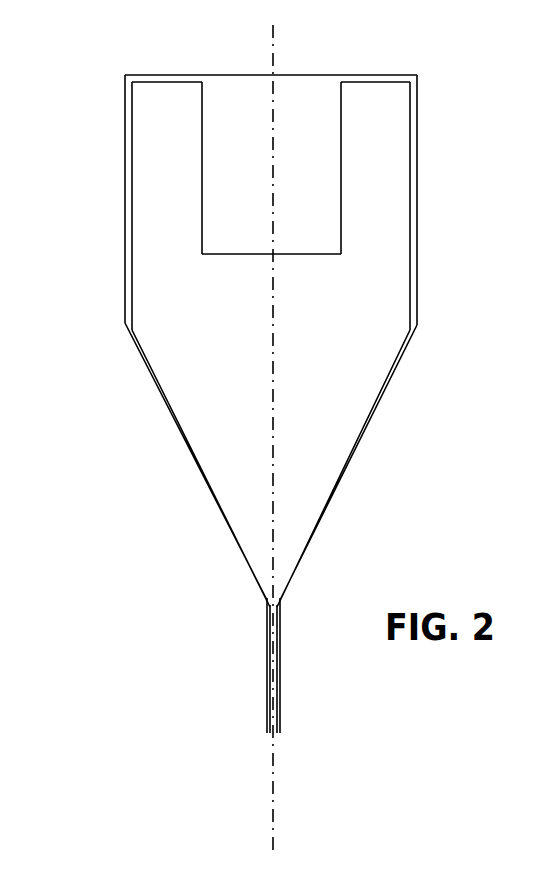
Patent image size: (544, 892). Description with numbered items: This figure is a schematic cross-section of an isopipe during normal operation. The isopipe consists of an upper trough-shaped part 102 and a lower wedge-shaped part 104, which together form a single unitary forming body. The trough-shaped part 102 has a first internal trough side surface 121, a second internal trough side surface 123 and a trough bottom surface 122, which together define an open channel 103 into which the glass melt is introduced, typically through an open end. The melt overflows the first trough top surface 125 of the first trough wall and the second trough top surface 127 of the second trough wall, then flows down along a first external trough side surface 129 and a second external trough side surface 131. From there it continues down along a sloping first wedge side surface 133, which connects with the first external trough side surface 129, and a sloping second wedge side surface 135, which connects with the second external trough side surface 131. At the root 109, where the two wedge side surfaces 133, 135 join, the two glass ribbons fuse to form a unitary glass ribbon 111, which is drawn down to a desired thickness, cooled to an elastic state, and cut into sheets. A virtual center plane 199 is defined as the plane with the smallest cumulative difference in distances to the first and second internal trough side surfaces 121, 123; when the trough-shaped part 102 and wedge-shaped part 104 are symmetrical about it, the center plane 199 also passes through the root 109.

The upper trough-shaped part 102 is at (384, 305).
The open channel 103 is at (270, 134).
The lower wedge-shaped part 104 is at (217, 364).
The root 109 is at (258, 601).
The unitary glass ribbon 111 is at (290, 647).
The first internal trough side surface 121 is at (210, 221).
The trough bottom surface 122 is at (254, 247).
The second internal trough side surface 123 is at (332, 200).
The first trough top surface 125 is at (159, 75).
The second trough top surface 127 is at (377, 73).
The first external trough side surface 129 is at (120, 220).
The second external trough side surface 131 is at (421, 208).
The first wedge side surface 133 is at (198, 427).
The second wedge side surface 135 is at (350, 430).
The center plane 199 is at (282, 48).